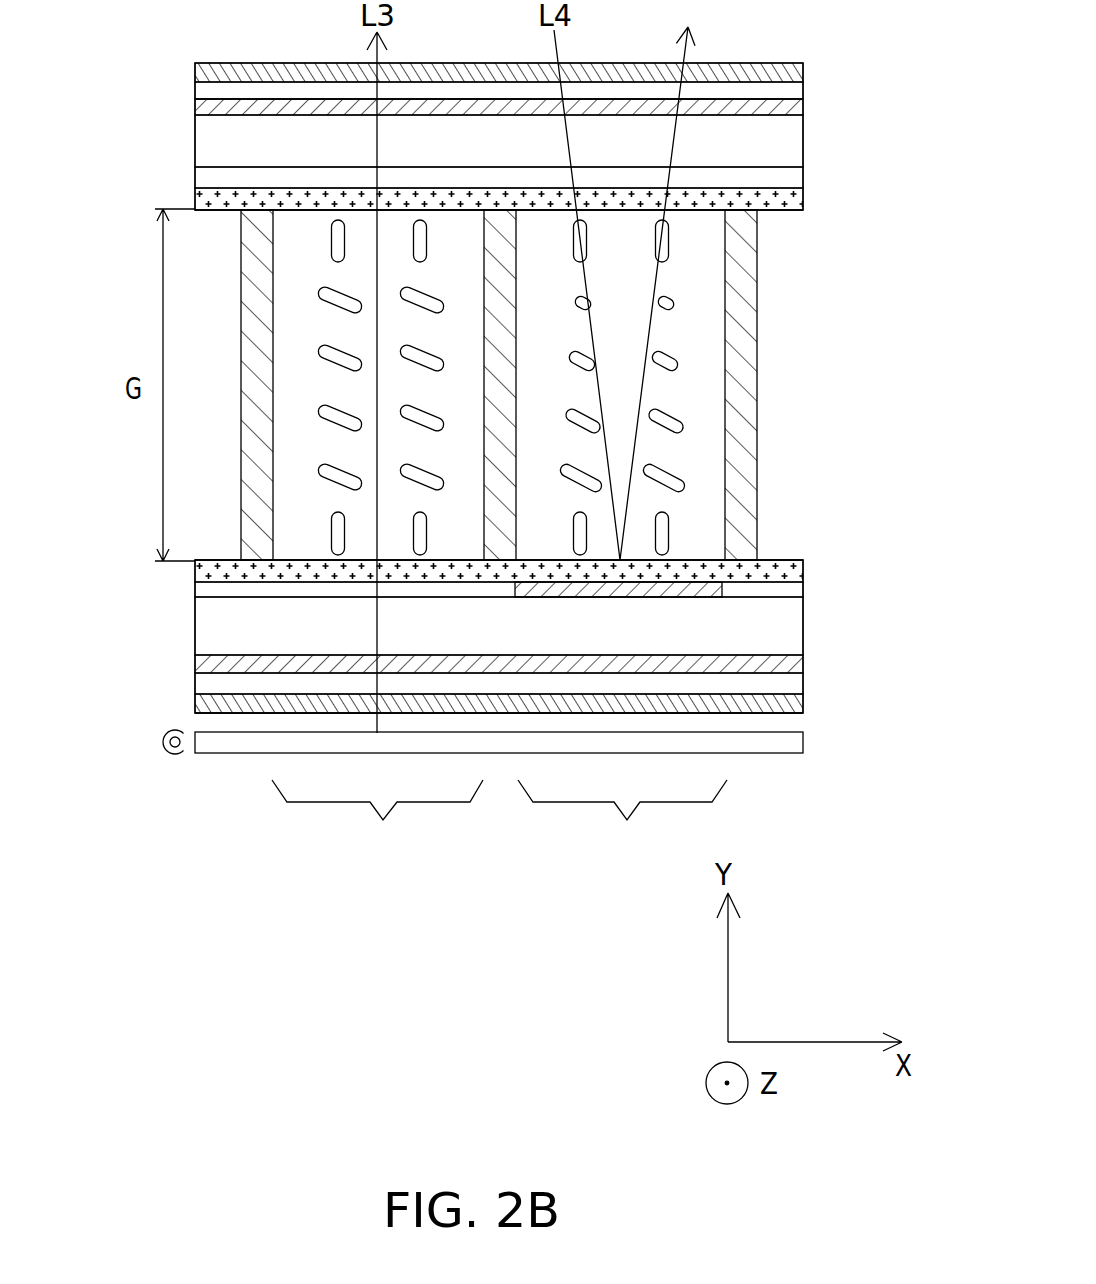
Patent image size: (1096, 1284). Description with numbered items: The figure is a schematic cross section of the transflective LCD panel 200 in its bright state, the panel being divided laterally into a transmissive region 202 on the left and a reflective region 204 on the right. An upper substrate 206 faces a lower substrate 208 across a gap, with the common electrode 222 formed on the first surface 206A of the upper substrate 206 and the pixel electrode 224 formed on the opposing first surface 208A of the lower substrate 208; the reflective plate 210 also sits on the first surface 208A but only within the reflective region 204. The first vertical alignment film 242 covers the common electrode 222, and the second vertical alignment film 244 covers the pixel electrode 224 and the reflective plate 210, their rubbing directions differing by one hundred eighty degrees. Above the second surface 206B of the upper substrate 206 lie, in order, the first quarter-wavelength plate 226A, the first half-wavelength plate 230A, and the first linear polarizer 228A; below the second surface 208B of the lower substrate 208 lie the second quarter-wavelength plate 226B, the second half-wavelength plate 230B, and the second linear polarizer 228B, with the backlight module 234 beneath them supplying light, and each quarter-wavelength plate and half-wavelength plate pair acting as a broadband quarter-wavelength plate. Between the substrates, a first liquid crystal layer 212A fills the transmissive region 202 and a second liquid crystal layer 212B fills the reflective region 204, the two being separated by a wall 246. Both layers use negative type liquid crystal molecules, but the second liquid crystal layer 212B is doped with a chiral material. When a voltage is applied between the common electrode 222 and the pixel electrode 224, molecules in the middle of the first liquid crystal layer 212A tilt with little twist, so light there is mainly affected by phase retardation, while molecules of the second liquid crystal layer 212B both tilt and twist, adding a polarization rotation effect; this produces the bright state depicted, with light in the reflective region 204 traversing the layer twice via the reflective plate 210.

The transflective LCD panel 200 is at (870, 41).
The transmissive region 202 is at (377, 825).
The reflective region 204 is at (622, 825).
The upper substrate 206 is at (775, 133).
The first surface of the upper substrate 206A is at (755, 170).
The second surface of the upper substrate 206B is at (805, 73).
The lower substrate 208 is at (773, 632).
The first surface of the lower substrate 208A is at (782, 597).
The second surface of the lower substrate 208B is at (767, 657).
The reflective plate 210 is at (708, 593).
The first liquid crystal layer 212A is at (293, 247).
The second liquid crystal layer 212B is at (703, 290).
The common electrode 222 is at (207, 185).
The pixel electrode 224 is at (207, 590).
The first quarter-wavelength plate 226A is at (207, 103).
The second quarter-wavelength plate 226B is at (207, 665).
The first linear polarizer 228A is at (207, 72).
The second linear polarizer 228B is at (207, 703).
The first half-wavelength plate 230A is at (207, 93).
The second half-wavelength plate 230B is at (207, 684).
The backlight module 234 is at (215, 742).
The first vertical alignment film 242 is at (795, 202).
The second vertical alignment film 244 is at (778, 569).
The wall 246 is at (500, 228).